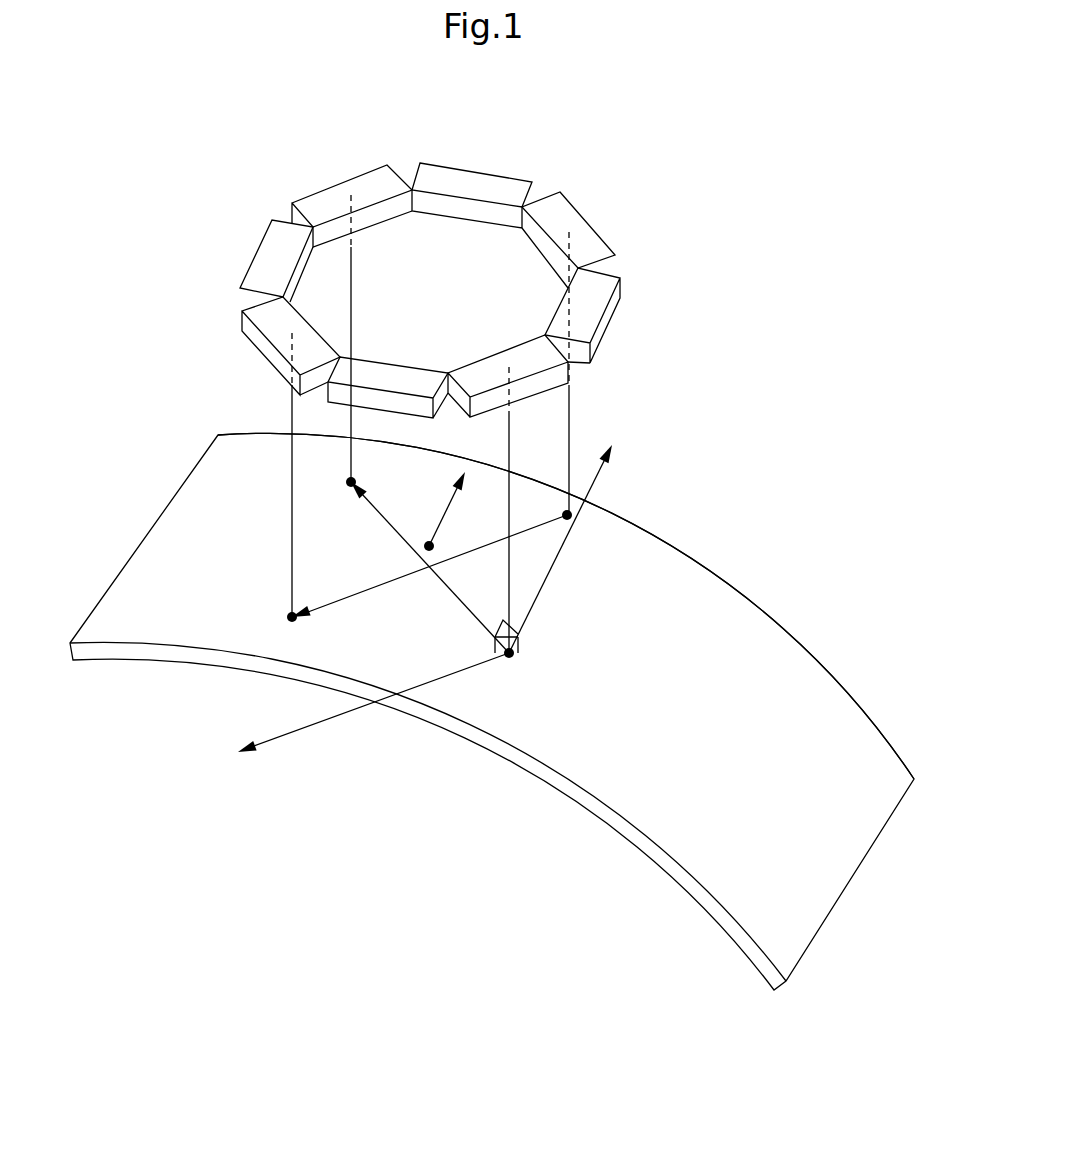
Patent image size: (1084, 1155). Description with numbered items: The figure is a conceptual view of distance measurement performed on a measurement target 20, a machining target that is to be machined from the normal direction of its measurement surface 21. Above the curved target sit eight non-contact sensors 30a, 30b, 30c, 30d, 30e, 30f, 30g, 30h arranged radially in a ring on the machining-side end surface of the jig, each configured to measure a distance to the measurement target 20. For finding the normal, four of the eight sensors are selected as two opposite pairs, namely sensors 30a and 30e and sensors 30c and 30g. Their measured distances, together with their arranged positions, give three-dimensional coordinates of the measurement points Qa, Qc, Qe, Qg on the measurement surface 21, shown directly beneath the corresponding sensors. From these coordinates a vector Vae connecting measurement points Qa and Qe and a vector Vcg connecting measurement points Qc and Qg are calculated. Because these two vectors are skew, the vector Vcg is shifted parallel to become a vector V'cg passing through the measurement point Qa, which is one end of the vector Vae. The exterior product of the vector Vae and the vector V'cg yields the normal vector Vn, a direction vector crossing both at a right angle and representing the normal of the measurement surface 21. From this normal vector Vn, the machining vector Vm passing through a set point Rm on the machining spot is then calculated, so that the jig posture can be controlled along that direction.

The measurement target 20 is at (849, 686).
The measurement surface 21 is at (744, 628).
The non-contact sensor 30a is at (547, 396).
The non-contact sensor 30b is at (617, 317).
The non-contact sensor 30c is at (592, 220).
The non-contact sensor 30d is at (476, 180).
The non-contact sensor 30e is at (343, 183).
The non-contact sensor 30f is at (262, 247).
The non-contact sensor 30g is at (257, 347).
The non-contact sensor 30h is at (336, 407).
The measurement point Qa is at (509, 658).
The measurement point Qc is at (567, 520).
The measurement point Qe is at (351, 487).
The measurement point Qg is at (290, 617).
The set point Rm is at (434, 546).
The machining vector Vm is at (448, 507).
The normal vector Vn is at (593, 483).
The vector Vae is at (473, 615).
The vector Vcg is at (387, 583).
The vector V'cg is at (373, 755).